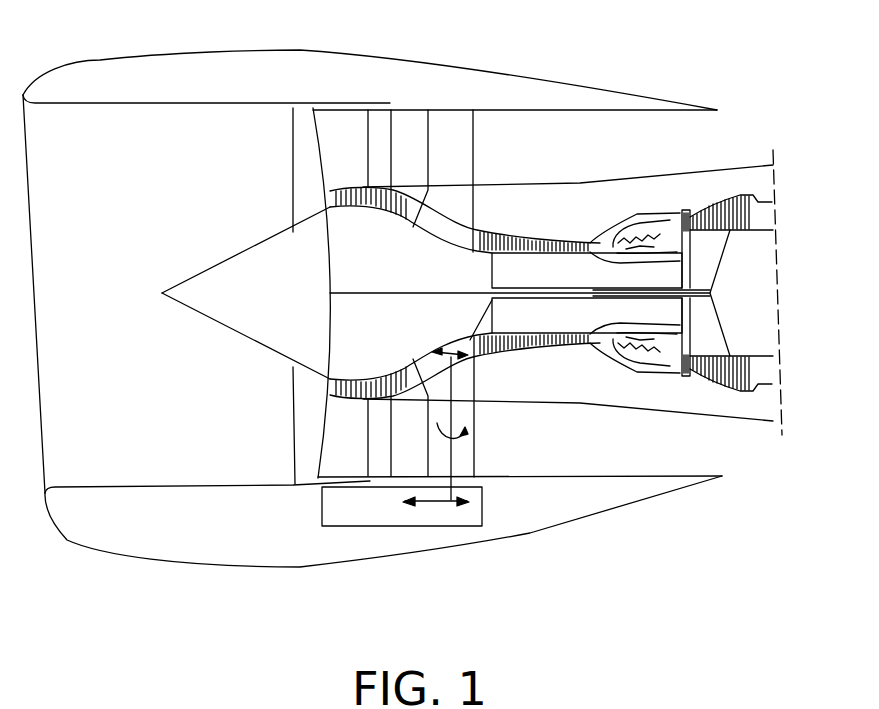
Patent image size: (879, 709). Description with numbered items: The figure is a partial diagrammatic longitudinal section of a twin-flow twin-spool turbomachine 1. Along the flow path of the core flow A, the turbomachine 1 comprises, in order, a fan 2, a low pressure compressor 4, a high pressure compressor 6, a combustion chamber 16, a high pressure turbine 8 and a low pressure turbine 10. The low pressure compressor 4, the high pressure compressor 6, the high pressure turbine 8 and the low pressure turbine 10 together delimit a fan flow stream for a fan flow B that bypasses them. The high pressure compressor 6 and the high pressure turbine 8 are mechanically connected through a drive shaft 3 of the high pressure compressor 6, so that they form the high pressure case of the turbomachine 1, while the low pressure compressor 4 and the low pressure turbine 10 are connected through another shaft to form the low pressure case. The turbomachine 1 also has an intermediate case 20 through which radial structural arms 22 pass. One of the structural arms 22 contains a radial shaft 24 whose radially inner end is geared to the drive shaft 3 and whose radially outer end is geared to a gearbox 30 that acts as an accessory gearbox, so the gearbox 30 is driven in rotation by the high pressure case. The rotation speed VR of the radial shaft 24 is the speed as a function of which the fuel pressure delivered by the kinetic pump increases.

The turbomachine 1 is at (668, 66).
The fan 2 is at (293, 157).
The drive shaft 3 is at (537, 300).
The low pressure compressor 4 is at (350, 190).
The high pressure compressor 6 is at (532, 232).
The high pressure turbine 8 is at (681, 212).
The low pressure turbine 10 is at (723, 200).
The combustion chamber 16 is at (638, 217).
The intermediate case 20 is at (426, 140).
The radial structural arms 22 is at (470, 403).
The radial shaft 24 is at (455, 447).
The gearbox 30 is at (352, 513).
The core flow A is at (312, 387).
The fan flow B is at (374, 451).
The rotation speed of the radial shaft VR is at (526, 383).